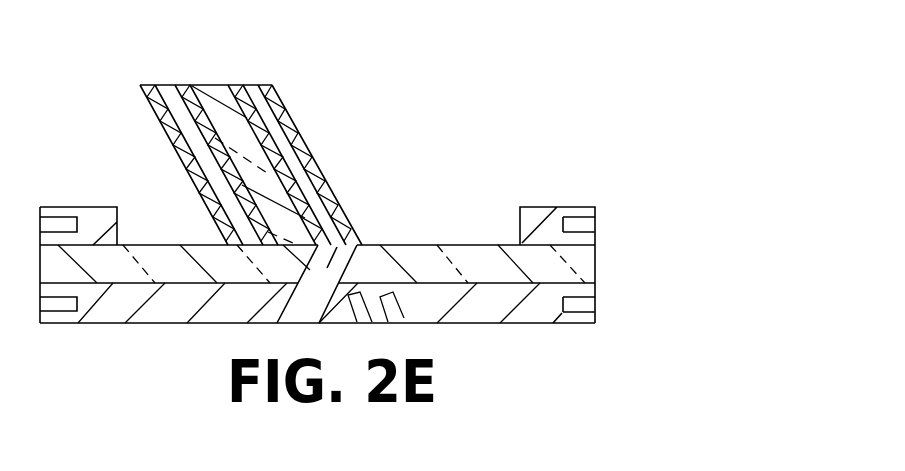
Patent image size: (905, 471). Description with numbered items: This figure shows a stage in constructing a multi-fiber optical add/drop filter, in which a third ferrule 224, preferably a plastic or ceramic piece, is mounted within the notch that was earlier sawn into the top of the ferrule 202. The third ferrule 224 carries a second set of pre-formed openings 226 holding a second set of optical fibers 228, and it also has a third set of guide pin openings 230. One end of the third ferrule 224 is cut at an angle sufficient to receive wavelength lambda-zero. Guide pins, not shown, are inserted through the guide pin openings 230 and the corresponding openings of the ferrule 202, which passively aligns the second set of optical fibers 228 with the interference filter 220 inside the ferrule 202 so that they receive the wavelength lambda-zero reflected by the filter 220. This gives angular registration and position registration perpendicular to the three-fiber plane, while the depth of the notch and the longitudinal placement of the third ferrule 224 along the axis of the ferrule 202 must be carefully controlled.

The ferrule 202 is at (504, 141).
The filter 220 is at (352, 233).
The third ferrule 224 is at (310, 152).
The second set of pre-formed openings 226 is at (285, 122).
The second set of optical fibers 228 is at (215, 84).
The third set of guide pin openings 230 is at (163, 84).